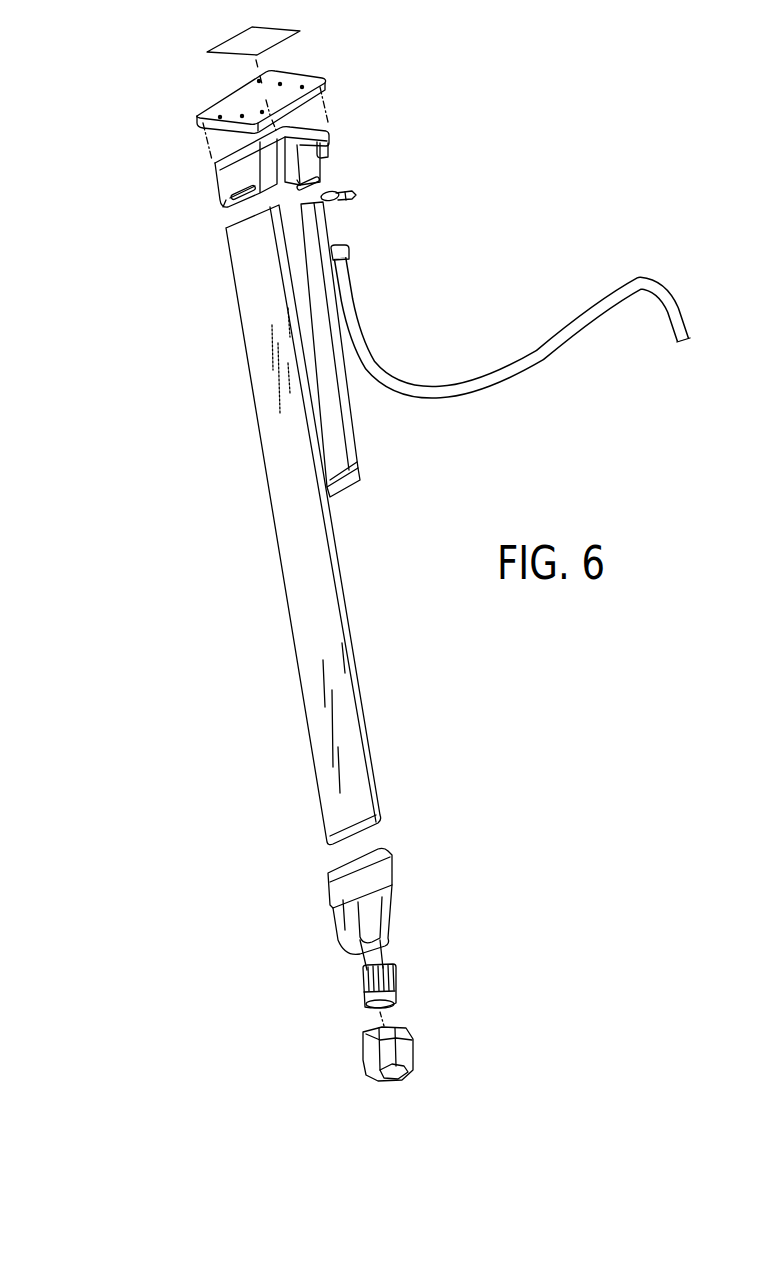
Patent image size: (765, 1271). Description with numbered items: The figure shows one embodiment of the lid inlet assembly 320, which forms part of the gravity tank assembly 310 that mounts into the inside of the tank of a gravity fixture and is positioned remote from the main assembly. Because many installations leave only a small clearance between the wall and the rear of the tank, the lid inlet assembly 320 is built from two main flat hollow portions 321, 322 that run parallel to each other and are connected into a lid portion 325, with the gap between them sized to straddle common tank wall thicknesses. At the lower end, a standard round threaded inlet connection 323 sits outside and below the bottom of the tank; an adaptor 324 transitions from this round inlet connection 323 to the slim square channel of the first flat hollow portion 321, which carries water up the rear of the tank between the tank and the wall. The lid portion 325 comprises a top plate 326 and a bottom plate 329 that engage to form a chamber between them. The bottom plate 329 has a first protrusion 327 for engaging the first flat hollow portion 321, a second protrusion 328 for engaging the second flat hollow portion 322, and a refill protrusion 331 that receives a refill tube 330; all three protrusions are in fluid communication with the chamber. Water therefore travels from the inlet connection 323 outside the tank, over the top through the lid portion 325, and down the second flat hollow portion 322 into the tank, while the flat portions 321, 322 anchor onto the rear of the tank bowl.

The gravity tank assembly 310 is at (118, 312).
The lid inlet assembly 320 is at (572, 34).
The first flat hollow portion 321 is at (303, 650).
The second flat hollow portion 322 is at (363, 445).
The inlet connection 323 is at (360, 990).
The adaptor 324 is at (418, 873).
The lid portion 325 is at (347, 25).
The top plate 326 is at (205, 107).
The first protrusion 327 is at (217, 194).
The second protrusion 328 is at (324, 170).
The bottom plate 329 is at (258, 175).
The refill tube 330 is at (548, 363).
The refill protrusion 331 is at (333, 157).